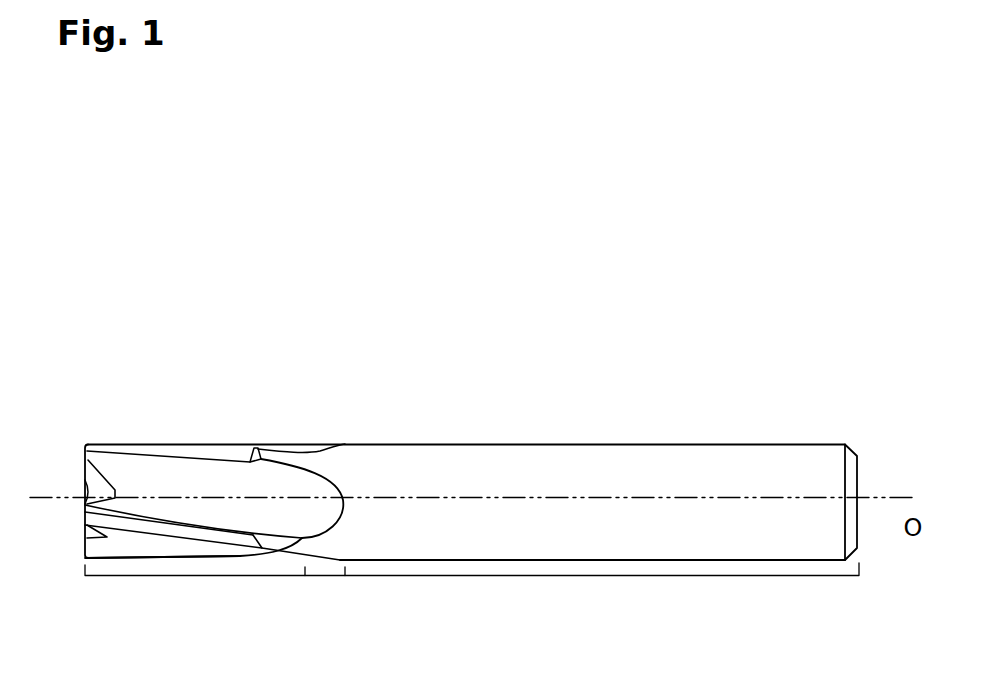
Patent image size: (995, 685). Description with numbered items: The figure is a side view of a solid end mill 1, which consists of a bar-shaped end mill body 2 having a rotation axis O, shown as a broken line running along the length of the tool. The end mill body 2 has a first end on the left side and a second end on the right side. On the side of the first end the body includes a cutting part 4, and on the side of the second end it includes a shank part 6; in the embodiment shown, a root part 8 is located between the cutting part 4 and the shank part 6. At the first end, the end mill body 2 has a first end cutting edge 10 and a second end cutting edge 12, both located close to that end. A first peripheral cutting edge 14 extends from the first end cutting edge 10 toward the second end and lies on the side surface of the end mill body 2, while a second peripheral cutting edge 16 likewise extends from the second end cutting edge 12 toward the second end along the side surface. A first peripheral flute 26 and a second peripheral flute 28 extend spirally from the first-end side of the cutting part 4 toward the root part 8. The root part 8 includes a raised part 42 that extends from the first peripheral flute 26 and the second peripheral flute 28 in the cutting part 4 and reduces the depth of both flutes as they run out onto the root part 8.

The end mill 1 is at (760, 352).
The end mill body 2 is at (786, 443).
The cutting part 4 is at (195, 576).
The shank part 6 is at (602, 576).
The root part 8 is at (325, 576).
The first end cutting edge 10 is at (85, 503).
The second end cutting edge 12 is at (85, 482).
The first peripheral cutting edge 14 is at (166, 515).
The second peripheral cutting edge 16 is at (127, 562).
The first peripheral flute 26 is at (245, 480).
The second peripheral flute 28 is at (132, 545).
The raised part 42 is at (340, 490).